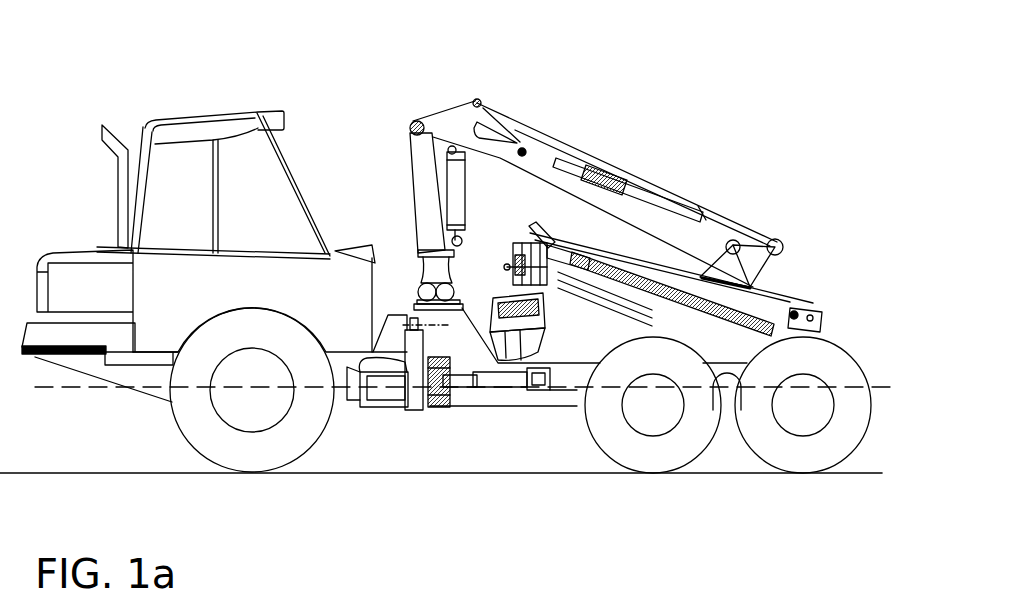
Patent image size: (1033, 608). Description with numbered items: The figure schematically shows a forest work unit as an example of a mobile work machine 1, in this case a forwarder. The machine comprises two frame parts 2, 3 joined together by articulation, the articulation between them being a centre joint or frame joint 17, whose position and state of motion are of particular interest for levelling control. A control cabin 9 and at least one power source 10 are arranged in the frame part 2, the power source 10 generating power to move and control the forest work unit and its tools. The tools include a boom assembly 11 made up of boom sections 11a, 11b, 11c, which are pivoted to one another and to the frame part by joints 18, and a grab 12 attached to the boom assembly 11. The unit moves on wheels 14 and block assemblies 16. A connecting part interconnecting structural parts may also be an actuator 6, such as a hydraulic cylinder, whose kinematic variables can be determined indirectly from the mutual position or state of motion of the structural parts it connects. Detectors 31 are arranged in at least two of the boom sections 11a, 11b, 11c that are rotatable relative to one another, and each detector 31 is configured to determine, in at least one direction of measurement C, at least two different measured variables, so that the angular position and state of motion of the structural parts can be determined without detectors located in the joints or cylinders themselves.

The mobile work machine 1 is at (356, 80).
The frame part 2 is at (146, 370).
The frame part 3 is at (560, 398).
The actuator 6 is at (424, 408).
The control cabin 9 is at (292, 173).
The power source 10 is at (82, 288).
The boom assembly 11 is at (664, 127).
The boom section 11a is at (787, 300).
The boom section 11b is at (535, 160).
The boom section 11c is at (423, 213).
The grab 12 is at (511, 393).
The wheels 14 is at (317, 413).
The block assemblies 16 is at (724, 395).
The centre joint/frame joint 17 is at (372, 415).
The joint 18 is at (447, 152).
The detector 31 is at (520, 157).
The direction of measurement C is at (880, 385).